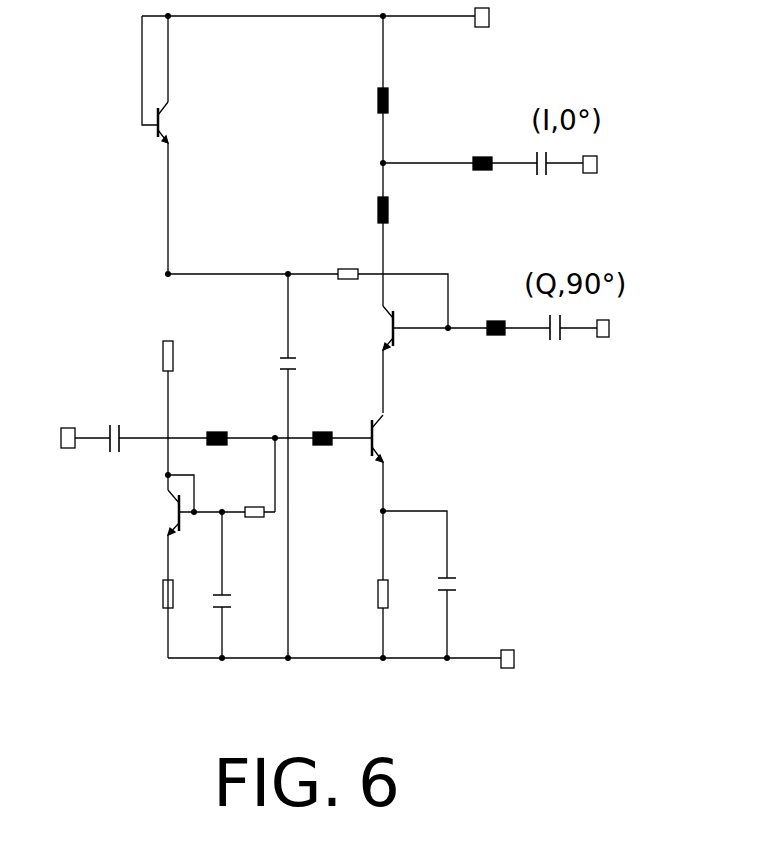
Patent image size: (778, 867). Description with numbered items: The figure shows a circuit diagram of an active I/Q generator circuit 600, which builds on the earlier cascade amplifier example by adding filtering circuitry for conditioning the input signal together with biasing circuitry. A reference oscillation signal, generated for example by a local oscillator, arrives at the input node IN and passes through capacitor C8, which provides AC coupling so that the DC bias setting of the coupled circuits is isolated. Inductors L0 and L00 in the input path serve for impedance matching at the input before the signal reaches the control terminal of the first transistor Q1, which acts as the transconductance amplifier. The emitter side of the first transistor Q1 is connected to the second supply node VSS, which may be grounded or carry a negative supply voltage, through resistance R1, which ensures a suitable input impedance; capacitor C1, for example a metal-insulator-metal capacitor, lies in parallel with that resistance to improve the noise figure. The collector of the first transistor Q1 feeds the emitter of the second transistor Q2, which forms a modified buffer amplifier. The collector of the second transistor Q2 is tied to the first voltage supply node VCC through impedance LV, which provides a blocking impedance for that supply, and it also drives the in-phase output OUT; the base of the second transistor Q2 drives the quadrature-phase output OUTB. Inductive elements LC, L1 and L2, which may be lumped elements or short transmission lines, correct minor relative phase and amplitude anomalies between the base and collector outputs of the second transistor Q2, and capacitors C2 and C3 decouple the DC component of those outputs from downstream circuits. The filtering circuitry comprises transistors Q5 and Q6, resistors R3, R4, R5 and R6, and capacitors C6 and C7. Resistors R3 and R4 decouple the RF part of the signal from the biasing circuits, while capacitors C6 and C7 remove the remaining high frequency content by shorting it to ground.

The active I/Q generator circuit 600 is at (113, 60).
The transistor Q6 is at (164, 126).
The impedance LV is at (389, 100).
The inductive element LC is at (389, 215).
The inductive element L1 is at (482, 157).
The inductive element L2 is at (494, 321).
The inductor L0 is at (212, 432).
The inductor L00 is at (319, 432).
The capacitor C1 is at (461, 587).
The capacitor C2 is at (541, 174).
The capacitor C3 is at (551, 341).
The capacitor C6 is at (300, 365).
The capacitor C7 is at (233, 604).
The capacitor C8 is at (109, 427).
The resistance R1 is at (377, 587).
The resistor R3 is at (351, 259).
The resistor R4 is at (250, 507).
The resistor R5 is at (162, 346).
The resistor R6 is at (162, 587).
The first transistor Q1 is at (378, 441).
The second transistor Q2 is at (388, 331).
The transistor Q5 is at (172, 515).
The first voltage supply node VCC is at (495, 17).
The second supply node VSS is at (520, 659).
The input node IN is at (62, 438).
The in-phase signal output OUT is at (603, 164).
The quadrature-phase signal output OUTB is at (619, 328).